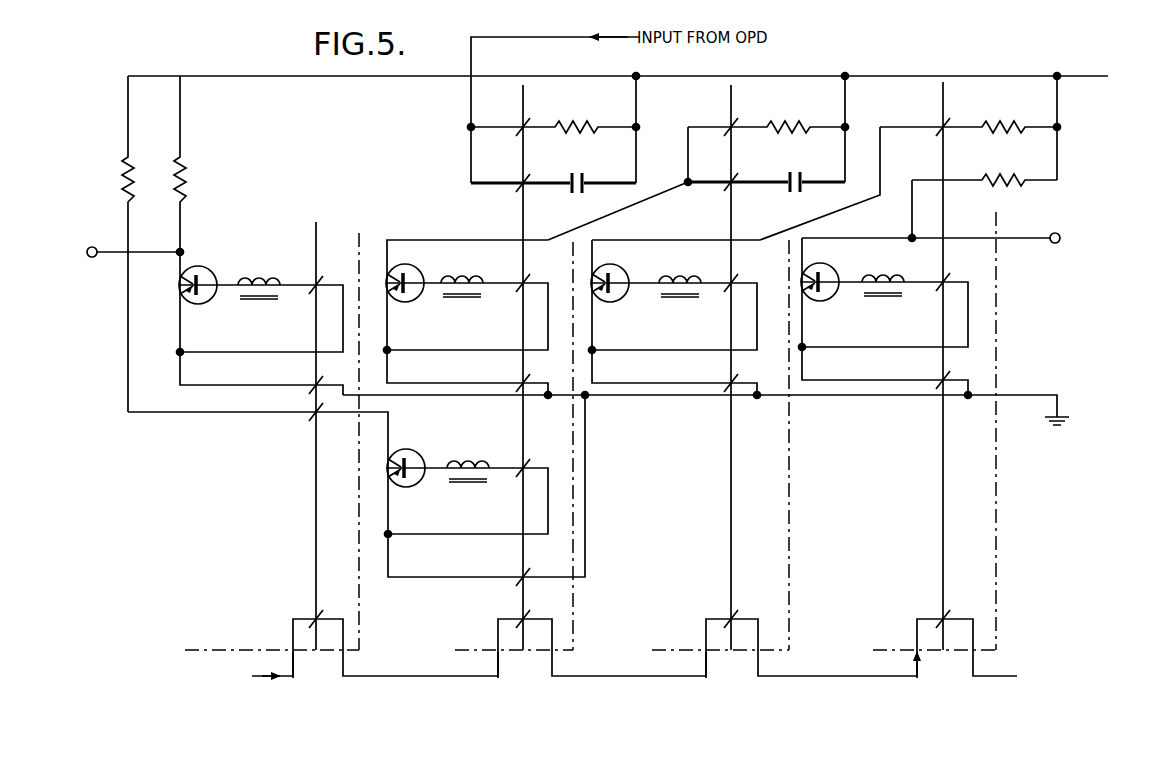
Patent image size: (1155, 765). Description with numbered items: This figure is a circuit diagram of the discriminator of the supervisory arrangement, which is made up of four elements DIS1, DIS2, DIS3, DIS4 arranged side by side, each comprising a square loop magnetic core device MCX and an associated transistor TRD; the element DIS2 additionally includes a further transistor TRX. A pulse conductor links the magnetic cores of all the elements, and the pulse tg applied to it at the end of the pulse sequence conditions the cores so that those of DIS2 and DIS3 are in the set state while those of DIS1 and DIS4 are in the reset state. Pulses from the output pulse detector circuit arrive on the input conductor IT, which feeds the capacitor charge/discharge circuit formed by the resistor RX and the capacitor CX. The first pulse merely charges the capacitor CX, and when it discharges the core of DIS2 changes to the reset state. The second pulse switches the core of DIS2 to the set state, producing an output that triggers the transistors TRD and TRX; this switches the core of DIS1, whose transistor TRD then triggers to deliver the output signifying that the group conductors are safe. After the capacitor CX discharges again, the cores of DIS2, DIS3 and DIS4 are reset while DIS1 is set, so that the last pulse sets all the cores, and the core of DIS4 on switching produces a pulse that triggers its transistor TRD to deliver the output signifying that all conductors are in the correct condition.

The input conductor IT is at (555, 110).
The resistor RX is at (582, 126).
The capacitor CX is at (570, 186).
The square loop magnetic core device MCX is at (314, 292).
The transistor TRD is at (204, 303).
The additional transistor TRX is at (414, 455).
The discriminator element DIS1 is at (272, 470).
The discriminator element DIS2 is at (467, 505).
The discriminator element DIS3 is at (649, 501).
The discriminator element DIS4 is at (859, 501).
The pulse t9 tg is at (633, 656).